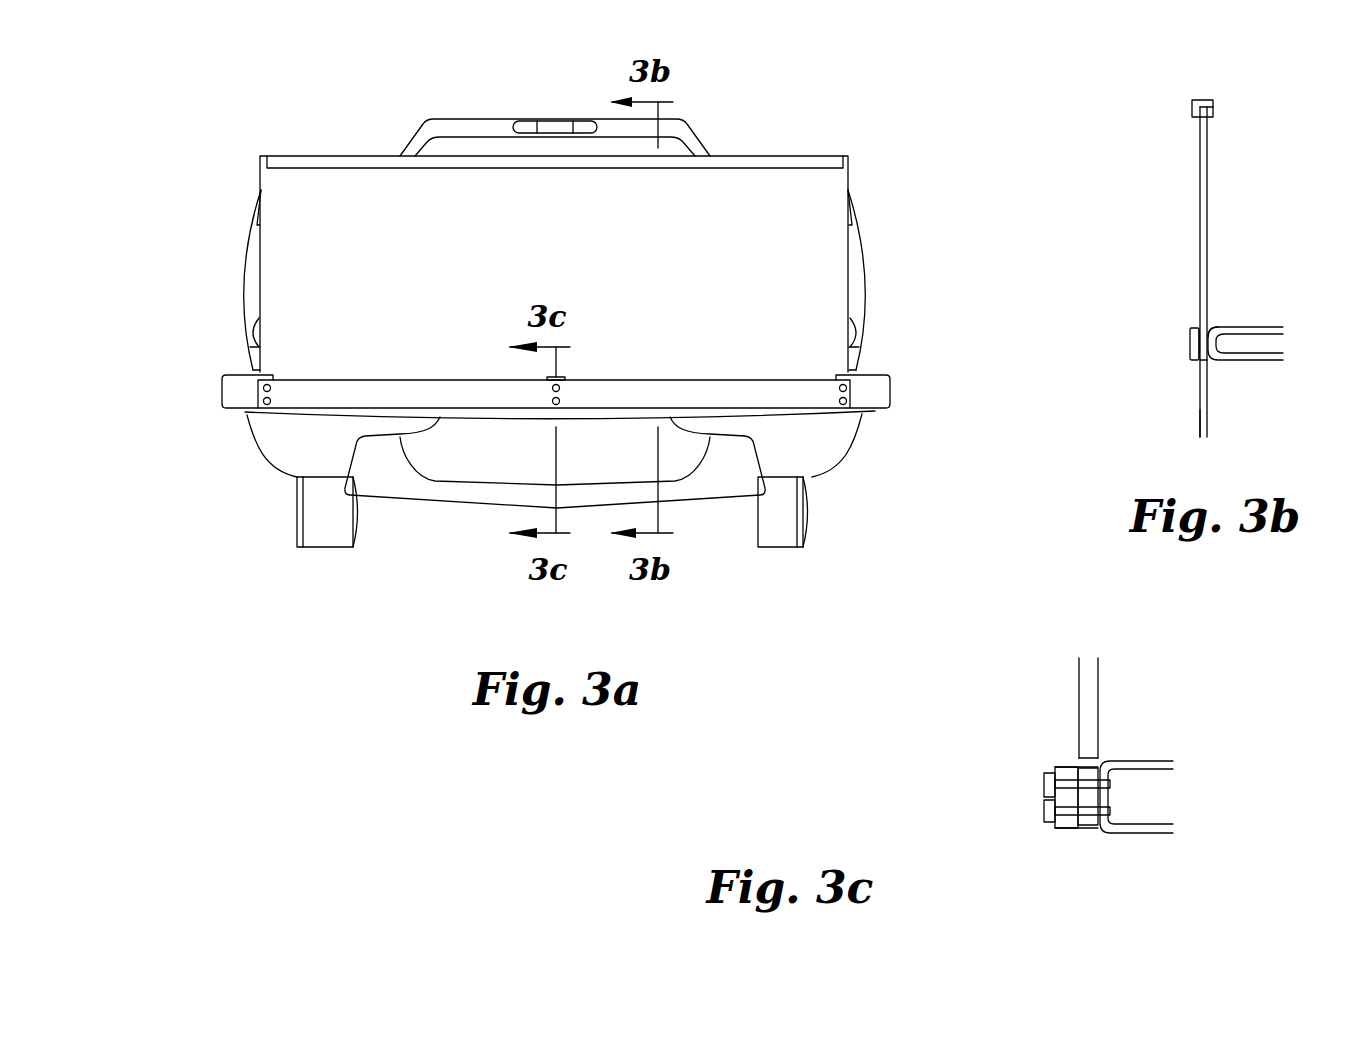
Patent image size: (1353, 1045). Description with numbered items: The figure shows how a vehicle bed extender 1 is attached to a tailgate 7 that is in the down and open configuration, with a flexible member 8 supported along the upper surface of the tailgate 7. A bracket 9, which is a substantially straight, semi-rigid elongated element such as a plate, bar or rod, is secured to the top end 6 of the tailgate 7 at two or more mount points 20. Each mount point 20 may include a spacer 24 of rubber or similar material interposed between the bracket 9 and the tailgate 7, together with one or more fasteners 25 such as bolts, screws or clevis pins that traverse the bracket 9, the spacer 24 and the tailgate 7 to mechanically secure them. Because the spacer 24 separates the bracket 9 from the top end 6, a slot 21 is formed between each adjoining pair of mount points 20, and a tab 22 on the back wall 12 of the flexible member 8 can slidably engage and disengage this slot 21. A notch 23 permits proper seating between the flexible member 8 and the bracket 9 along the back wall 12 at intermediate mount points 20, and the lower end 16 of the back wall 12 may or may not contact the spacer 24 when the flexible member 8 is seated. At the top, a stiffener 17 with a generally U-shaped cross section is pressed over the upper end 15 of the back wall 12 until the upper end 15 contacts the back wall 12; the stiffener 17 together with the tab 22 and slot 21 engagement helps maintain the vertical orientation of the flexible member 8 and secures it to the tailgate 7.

In FIG. 3a, the vehicle bed extender 1 is at (214, 172).
In FIG. 3b, the top end 6 is at (1213, 327).
In FIG. 3a, the tailgate 7 is at (226, 398).
In FIG. 3b, the tailgate 7 is at (1252, 327).
In FIG. 3c, the tailgate 7 is at (1145, 835).
In FIG. 3a, the flexible member 8 is at (270, 298).
In FIG. 3a, the bracket 9 is at (757, 398).
In FIG. 3b, the bracket 9 is at (1195, 328).
In FIG. 3c, the bracket 9 is at (1056, 768).
In FIG. 3a, the back wall 12 is at (340, 278).
In FIG. 3b, the back wall 12 is at (1207, 205).
In FIG. 3c, the back wall 12 is at (1100, 685).
In FIG. 3b, the upper end 15 is at (1200, 103).
In FIG. 3b, the lower end 16 is at (1203, 360).
In FIG. 3c, the lower end 16 is at (1083, 755).
In FIG. 3a, the stiffener 17 is at (382, 163).
In FIG. 3b, the stiffener 17 is at (1215, 107).
In FIG. 3a, the mount point 20 is at (254, 412).
In FIG. 3c, the mount point 20 is at (1020, 835).
In FIG. 3b, the slot 21 is at (1145, 421).
In FIG. 3b, the tab 22 is at (1164, 343).
In FIG. 3a, the notch 23 is at (563, 378).
In FIG. 3c, the notch 23 is at (1097, 766).
In FIG. 3c, the spacer 24 is at (1088, 830).
In FIG. 3c, the fasteners 25 is at (1044, 783).